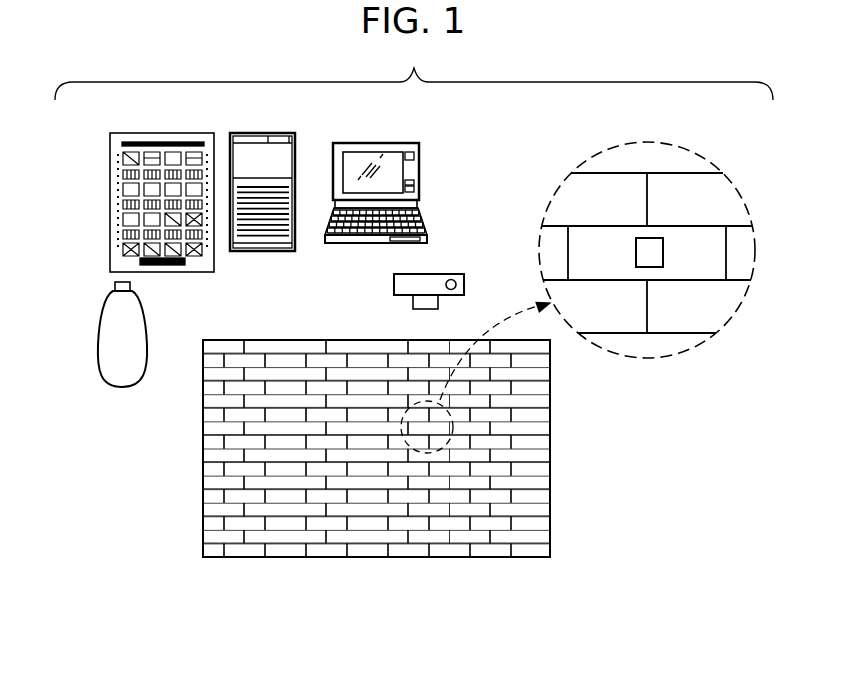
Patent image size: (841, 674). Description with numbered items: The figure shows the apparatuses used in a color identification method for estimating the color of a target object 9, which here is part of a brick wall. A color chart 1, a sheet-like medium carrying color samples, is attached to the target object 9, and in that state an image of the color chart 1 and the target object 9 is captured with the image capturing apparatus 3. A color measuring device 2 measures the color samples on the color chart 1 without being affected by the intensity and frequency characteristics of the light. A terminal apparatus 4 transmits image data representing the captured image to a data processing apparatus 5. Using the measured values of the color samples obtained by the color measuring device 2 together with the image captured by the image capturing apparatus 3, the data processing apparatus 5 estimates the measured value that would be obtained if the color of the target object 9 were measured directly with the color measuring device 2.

The color chart 1 is at (110, 208).
The color measuring device 2 is at (148, 312).
The image capturing apparatus 3 is at (397, 283).
The terminal apparatus 4 is at (420, 213).
The data processing apparatus 5 is at (272, 253).
The target object 9 is at (643, 248).